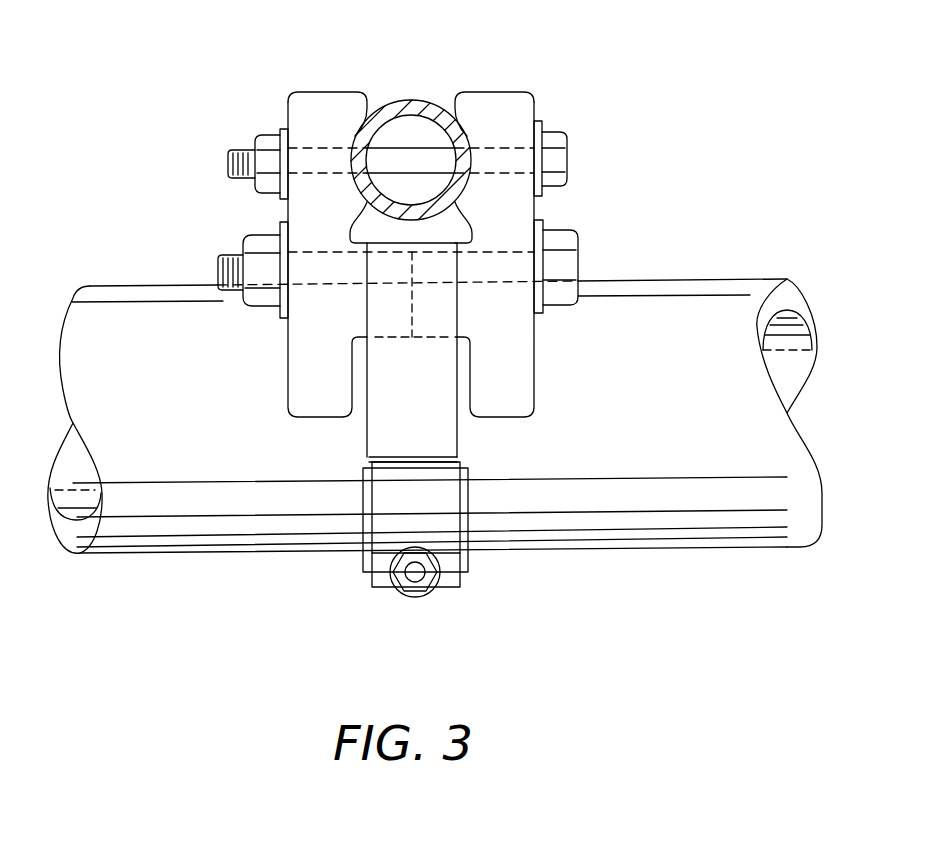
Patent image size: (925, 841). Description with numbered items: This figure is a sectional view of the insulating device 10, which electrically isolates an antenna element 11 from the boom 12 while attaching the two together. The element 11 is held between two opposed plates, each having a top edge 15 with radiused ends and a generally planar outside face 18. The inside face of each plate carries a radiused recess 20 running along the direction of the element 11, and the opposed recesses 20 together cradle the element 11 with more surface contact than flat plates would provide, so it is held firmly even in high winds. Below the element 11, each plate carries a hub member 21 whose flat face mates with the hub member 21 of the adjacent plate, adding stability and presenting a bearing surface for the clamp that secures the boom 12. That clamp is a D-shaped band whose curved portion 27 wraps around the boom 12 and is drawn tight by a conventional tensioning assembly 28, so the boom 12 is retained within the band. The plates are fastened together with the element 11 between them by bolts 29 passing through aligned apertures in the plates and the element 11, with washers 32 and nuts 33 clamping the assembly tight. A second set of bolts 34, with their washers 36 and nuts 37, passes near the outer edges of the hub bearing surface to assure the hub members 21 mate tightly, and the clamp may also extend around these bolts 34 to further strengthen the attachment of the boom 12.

The insulating device 10 is at (549, 90).
The element 11 is at (421, 108).
The boom 12 is at (257, 538).
The top edge 15 is at (317, 92).
The outside face 18 is at (287, 210).
The radiused recess 20 is at (361, 129).
The hub member 21 is at (393, 308).
The curved portion 27 is at (385, 433).
The tensioning assembly 28 is at (443, 526).
The bolts 29 is at (556, 162).
The washers 32 is at (280, 128).
The nuts 33 is at (262, 143).
The bolts 34 is at (570, 267).
The washers 36 is at (283, 230).
The nuts 37 is at (255, 243).